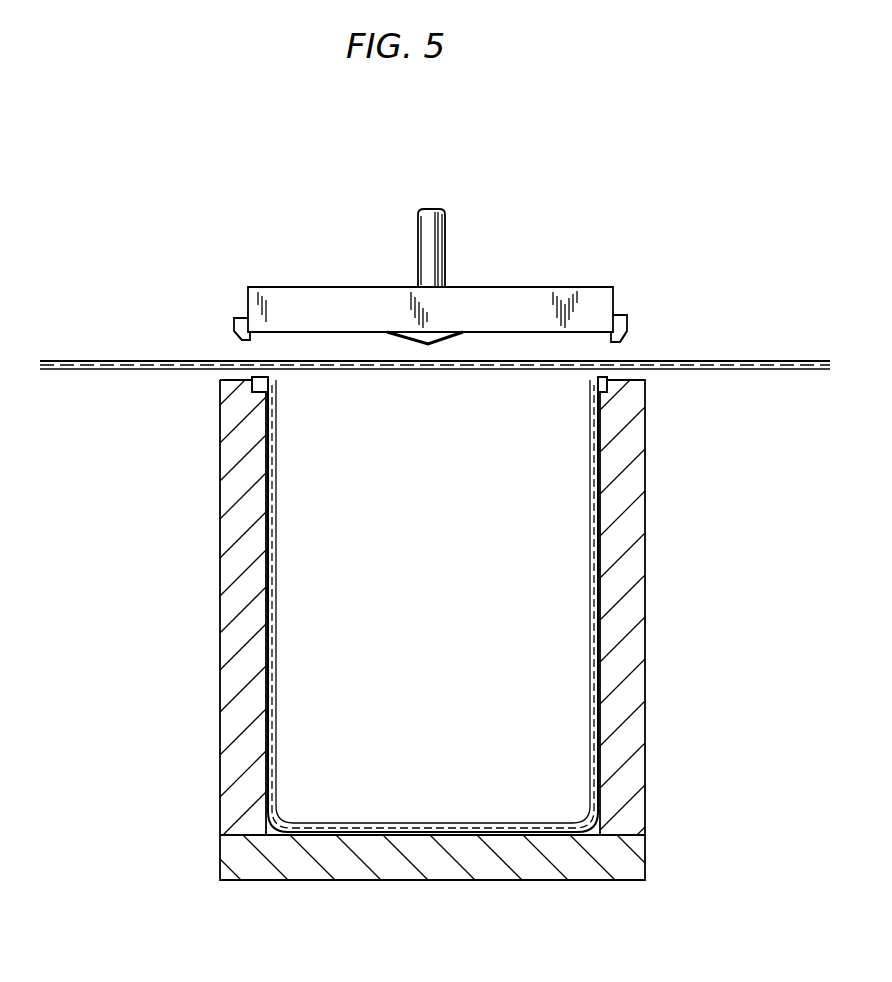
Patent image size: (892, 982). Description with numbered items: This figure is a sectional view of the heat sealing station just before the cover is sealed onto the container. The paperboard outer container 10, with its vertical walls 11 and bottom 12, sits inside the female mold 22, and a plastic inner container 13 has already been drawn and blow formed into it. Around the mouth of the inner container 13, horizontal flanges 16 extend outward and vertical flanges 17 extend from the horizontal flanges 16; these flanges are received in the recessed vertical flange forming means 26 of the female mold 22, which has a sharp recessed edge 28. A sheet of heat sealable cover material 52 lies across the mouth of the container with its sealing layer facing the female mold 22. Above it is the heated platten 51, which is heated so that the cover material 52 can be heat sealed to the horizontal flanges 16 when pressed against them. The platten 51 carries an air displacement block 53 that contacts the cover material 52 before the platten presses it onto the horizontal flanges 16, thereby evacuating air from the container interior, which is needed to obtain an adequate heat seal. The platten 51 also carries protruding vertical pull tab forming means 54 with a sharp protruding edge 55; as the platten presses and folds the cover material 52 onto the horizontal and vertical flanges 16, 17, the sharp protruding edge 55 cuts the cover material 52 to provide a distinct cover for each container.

The paperboard outer container 10 is at (266, 672).
The vertical walls 11 is at (266, 756).
The bottom 12 is at (452, 828).
The plastic inner container 13 is at (590, 668).
The horizontal flanges 16 is at (272, 376).
The vertical flanges 17 is at (270, 397).
The female mold 22 is at (646, 834).
The recessed vertical flange forming means 26 is at (610, 386).
The sharp recessed edge 28 is at (605, 397).
The heated platten 51 is at (615, 293).
The heat sealable cover material 52 is at (593, 361).
The air displacement block 53 is at (466, 334).
The protruding vertical pull tab forming means 54 is at (234, 318).
The sharp protruding edge 55 is at (240, 340).